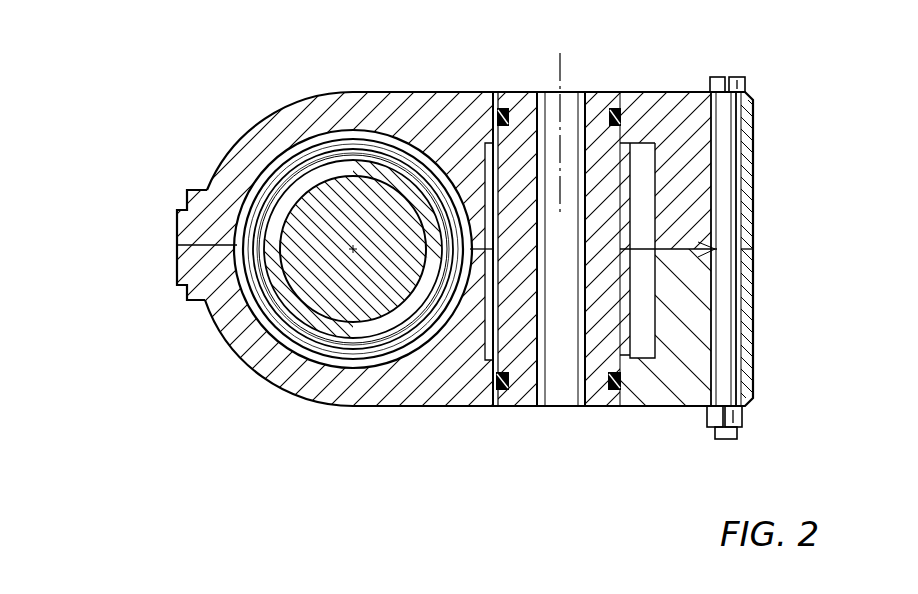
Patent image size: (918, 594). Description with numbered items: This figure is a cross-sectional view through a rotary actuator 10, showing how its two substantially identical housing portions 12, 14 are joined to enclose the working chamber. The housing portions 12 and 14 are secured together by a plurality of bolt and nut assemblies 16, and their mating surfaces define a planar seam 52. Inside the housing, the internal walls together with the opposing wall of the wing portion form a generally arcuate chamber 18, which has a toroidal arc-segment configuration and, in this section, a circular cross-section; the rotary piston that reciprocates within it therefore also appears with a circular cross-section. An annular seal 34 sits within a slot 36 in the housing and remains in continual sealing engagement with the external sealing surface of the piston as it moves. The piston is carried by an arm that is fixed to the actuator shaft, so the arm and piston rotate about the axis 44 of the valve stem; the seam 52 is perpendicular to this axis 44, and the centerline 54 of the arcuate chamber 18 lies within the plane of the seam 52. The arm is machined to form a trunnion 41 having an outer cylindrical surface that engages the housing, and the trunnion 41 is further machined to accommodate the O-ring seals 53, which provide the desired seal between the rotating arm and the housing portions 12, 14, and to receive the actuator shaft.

The rotary actuator 10 is at (796, 207).
The housing portion 12 is at (447, 106).
The housing portion 14 is at (356, 392).
The bolt and nut assemblies 16 is at (193, 192).
The arcuate chamber 18 is at (362, 150).
The annular seal 34 is at (277, 172).
The slot 36 is at (313, 136).
The trunnion 41 is at (503, 366).
The axis 44 is at (561, 70).
The planar seam 52 is at (683, 250).
The O-ring seals 53 is at (619, 392).
The centerline 54 is at (286, 292).